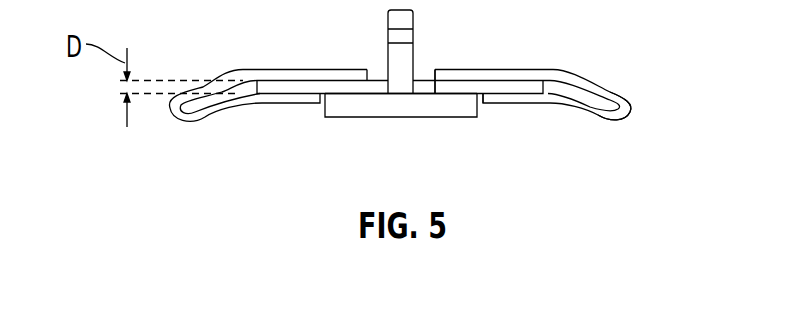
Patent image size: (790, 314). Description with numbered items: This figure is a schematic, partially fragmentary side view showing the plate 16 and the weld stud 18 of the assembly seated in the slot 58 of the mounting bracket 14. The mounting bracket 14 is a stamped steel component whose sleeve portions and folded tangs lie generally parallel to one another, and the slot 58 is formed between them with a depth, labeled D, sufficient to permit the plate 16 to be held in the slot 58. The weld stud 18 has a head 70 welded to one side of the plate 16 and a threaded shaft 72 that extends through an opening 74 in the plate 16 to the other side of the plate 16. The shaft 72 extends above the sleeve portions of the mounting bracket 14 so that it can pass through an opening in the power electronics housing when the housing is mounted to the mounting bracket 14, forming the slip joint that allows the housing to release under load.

The mounting bracket 14 is at (533, 70).
The plate 16 is at (447, 87).
The weld stud 18 is at (415, 47).
The slot 58 is at (553, 84).
The head 70 is at (365, 118).
The threaded shaft 72 is at (387, 58).
The opening 74 is at (368, 88).